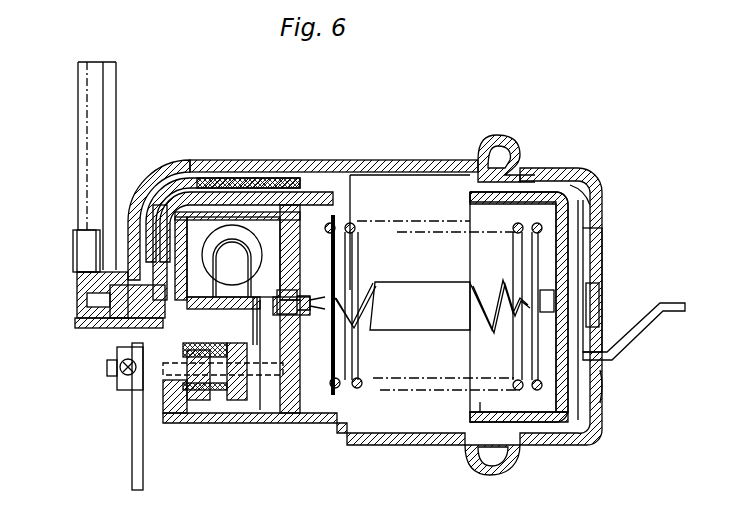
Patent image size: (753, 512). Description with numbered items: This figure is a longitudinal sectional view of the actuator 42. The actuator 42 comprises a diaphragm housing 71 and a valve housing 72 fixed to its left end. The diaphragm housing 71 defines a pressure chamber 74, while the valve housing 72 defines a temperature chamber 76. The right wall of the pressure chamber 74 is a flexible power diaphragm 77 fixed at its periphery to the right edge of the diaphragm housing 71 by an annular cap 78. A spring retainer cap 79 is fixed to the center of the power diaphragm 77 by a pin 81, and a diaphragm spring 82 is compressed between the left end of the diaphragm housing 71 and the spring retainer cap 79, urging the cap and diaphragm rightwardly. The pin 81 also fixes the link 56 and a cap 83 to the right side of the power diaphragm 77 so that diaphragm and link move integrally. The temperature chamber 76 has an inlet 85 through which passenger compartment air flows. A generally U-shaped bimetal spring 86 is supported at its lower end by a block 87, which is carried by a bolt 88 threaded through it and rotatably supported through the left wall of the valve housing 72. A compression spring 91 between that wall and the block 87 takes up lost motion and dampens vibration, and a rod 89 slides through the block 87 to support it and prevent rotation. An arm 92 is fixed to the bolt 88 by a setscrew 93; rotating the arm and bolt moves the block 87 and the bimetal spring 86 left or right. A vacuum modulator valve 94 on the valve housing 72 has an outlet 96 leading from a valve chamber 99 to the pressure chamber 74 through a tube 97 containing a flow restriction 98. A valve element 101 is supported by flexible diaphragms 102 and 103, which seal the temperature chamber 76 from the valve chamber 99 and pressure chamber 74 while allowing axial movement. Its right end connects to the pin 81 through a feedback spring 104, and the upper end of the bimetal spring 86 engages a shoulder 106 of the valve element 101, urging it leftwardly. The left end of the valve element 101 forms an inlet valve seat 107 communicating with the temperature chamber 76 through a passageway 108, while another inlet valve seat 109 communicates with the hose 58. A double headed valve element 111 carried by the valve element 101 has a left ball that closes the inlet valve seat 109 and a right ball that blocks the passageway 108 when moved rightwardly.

The actuator 42 is at (422, 106).
The link 56 is at (666, 302).
The hose 58 is at (111, 76).
The diaphragm housing 71 is at (406, 160).
The valve housing 72 is at (290, 176).
The pressure chamber 74 is at (426, 206).
The temperature chamber 76 is at (328, 178).
The power diaphragm 77 is at (533, 170).
The annular cap 78 is at (507, 138).
The spring retainer cap 79 is at (588, 184).
The pin 81 is at (584, 303).
The diaphragm spring 82 is at (401, 233).
The cap 83 is at (582, 405).
The inlet 85 is at (186, 160).
The bimetal spring 86 is at (347, 172).
The block 87 is at (250, 402).
The bolt 88 is at (158, 394).
The rod 89 is at (178, 387).
The compression spring 91 is at (108, 372).
The arm 92 is at (131, 478).
The setscrew 93 is at (127, 393).
The vacuum modulator valve 94 is at (108, 232).
The outlet 96 is at (110, 262).
The tube 97 is at (222, 172).
The flow restriction 98 is at (200, 176).
The valve chamber 99 is at (145, 338).
The valve element 101 is at (328, 430).
The flexible diaphragm 102 is at (207, 178).
The flexible diaphragm 103 is at (318, 318).
The feedback spring 104 is at (413, 276).
The shoulder 106 is at (292, 420).
The inlet valve seat 107 is at (163, 166).
The passageway 108 is at (76, 328).
The inlet valve seat 109 is at (84, 309).
The double headed valve element 111 is at (82, 288).